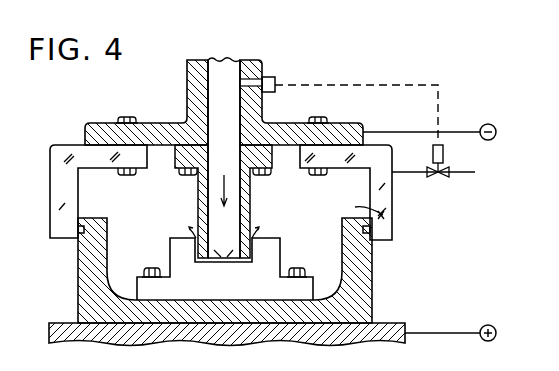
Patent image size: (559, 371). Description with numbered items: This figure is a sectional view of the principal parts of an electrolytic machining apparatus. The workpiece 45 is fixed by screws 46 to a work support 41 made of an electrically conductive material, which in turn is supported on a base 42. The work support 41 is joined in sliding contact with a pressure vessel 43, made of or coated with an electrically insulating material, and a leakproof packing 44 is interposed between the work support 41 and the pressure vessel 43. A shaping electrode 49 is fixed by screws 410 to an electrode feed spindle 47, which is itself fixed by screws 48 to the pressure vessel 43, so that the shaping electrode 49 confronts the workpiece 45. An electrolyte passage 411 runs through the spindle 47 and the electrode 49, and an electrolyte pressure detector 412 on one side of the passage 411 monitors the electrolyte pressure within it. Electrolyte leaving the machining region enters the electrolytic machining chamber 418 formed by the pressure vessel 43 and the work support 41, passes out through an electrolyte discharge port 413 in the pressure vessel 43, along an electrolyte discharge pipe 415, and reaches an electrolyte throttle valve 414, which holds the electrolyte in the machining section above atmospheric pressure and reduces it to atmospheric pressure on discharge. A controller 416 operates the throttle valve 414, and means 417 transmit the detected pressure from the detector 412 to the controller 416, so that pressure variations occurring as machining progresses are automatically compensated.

The work support 41 is at (360, 283).
The base 42 is at (378, 331).
The pressure vessel 43 is at (59, 167).
The leakproof packing 44 is at (78, 230).
The workpiece 45 is at (272, 256).
The screws 46 is at (298, 267).
The electrode feed spindle 47 is at (246, 60).
The screws 48 is at (126, 117).
The shaping electrode 49 is at (250, 213).
The screws 410 is at (192, 176).
The electrolyte passage 411 is at (218, 92).
The electrolyte pressure detector 412 is at (275, 83).
The electrolyte discharge port 413 is at (392, 161).
The electrolyte throttle valve 414 is at (440, 179).
The electrolyte discharge pipe 415 is at (420, 175).
The controller 416 is at (444, 157).
The transmitting means 417 is at (410, 95).
The electrolytic machining chamber 418 is at (392, 229).